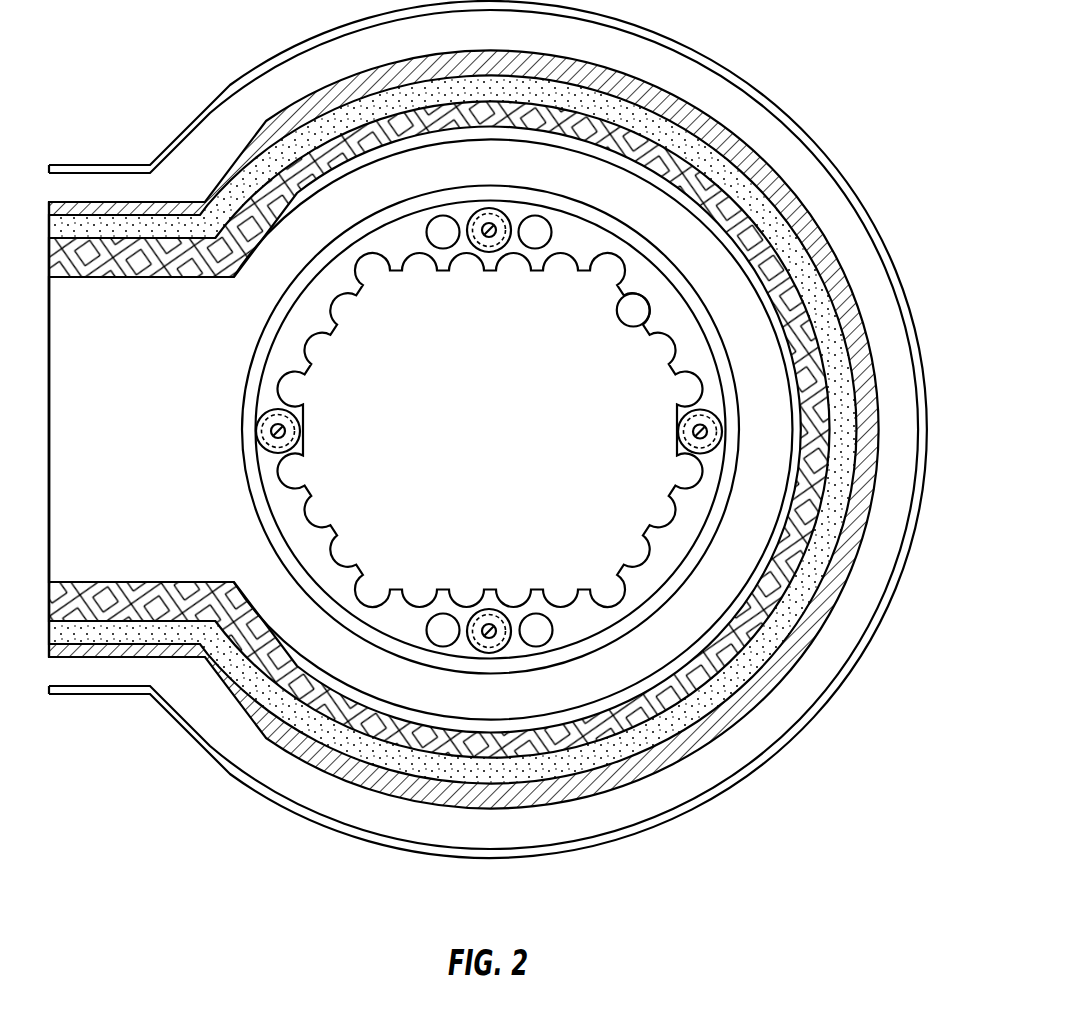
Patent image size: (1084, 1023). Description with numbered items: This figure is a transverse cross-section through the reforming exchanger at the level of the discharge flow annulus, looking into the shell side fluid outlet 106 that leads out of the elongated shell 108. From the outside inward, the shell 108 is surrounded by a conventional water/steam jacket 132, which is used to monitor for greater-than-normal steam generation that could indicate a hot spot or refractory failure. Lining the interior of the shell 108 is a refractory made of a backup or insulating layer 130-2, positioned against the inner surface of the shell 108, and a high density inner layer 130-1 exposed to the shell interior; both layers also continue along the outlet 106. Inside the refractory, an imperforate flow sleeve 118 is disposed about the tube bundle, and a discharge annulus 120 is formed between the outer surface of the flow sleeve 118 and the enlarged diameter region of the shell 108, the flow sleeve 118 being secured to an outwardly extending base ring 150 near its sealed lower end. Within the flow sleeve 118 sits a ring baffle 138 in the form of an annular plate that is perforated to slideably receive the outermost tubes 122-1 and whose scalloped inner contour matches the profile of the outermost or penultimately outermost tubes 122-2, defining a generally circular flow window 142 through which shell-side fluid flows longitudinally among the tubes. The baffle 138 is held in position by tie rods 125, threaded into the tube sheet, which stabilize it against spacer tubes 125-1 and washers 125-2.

The shell side fluid outlet 106 is at (140, 440).
The elongated shell 108 is at (767, 163).
The flow sleeve 118 is at (603, 210).
The discharge annulus 120 is at (737, 288).
The outermost tubes 122-1 is at (537, 613).
The outermost or penultimately outermost tubes 122-2 is at (617, 311).
The tie rods 125 is at (695, 428).
The spacer tubes 125-1 is at (299, 432).
The washers 125-2 is at (484, 607).
The high density inner layer 130-1 is at (547, 742).
The insulating layer 130-2 is at (722, 697).
The water/steam jacket 132 is at (288, 806).
The ring baffle 138 is at (396, 236).
The flow window 142 is at (515, 440).
The base ring 150 is at (513, 720).